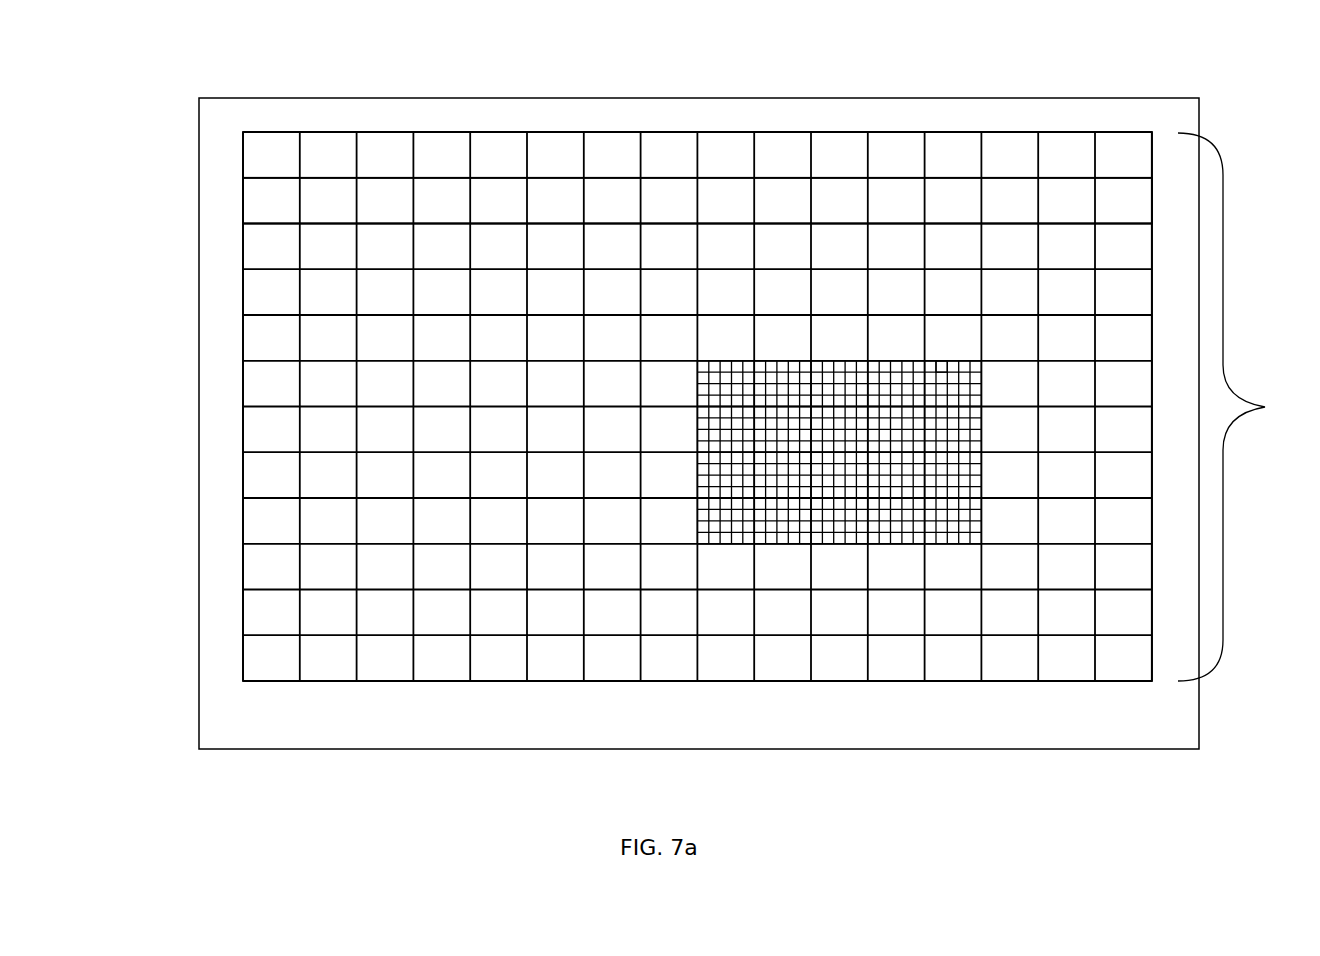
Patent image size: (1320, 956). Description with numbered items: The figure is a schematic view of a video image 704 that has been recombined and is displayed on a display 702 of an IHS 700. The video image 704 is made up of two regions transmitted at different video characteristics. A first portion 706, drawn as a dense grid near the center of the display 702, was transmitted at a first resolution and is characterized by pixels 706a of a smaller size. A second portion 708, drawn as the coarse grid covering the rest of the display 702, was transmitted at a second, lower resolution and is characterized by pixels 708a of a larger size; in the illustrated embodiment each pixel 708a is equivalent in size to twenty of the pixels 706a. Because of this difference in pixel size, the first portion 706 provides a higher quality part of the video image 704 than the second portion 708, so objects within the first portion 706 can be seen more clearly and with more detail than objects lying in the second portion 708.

The IHS 700 is at (699, 423).
The display 702 is at (243, 440).
The video image 704 is at (1246, 407).
The first portion 706 is at (795, 361).
The pixels 706a is at (938, 361).
The second portion 708 is at (390, 132).
The pixels 708a is at (233, 224).